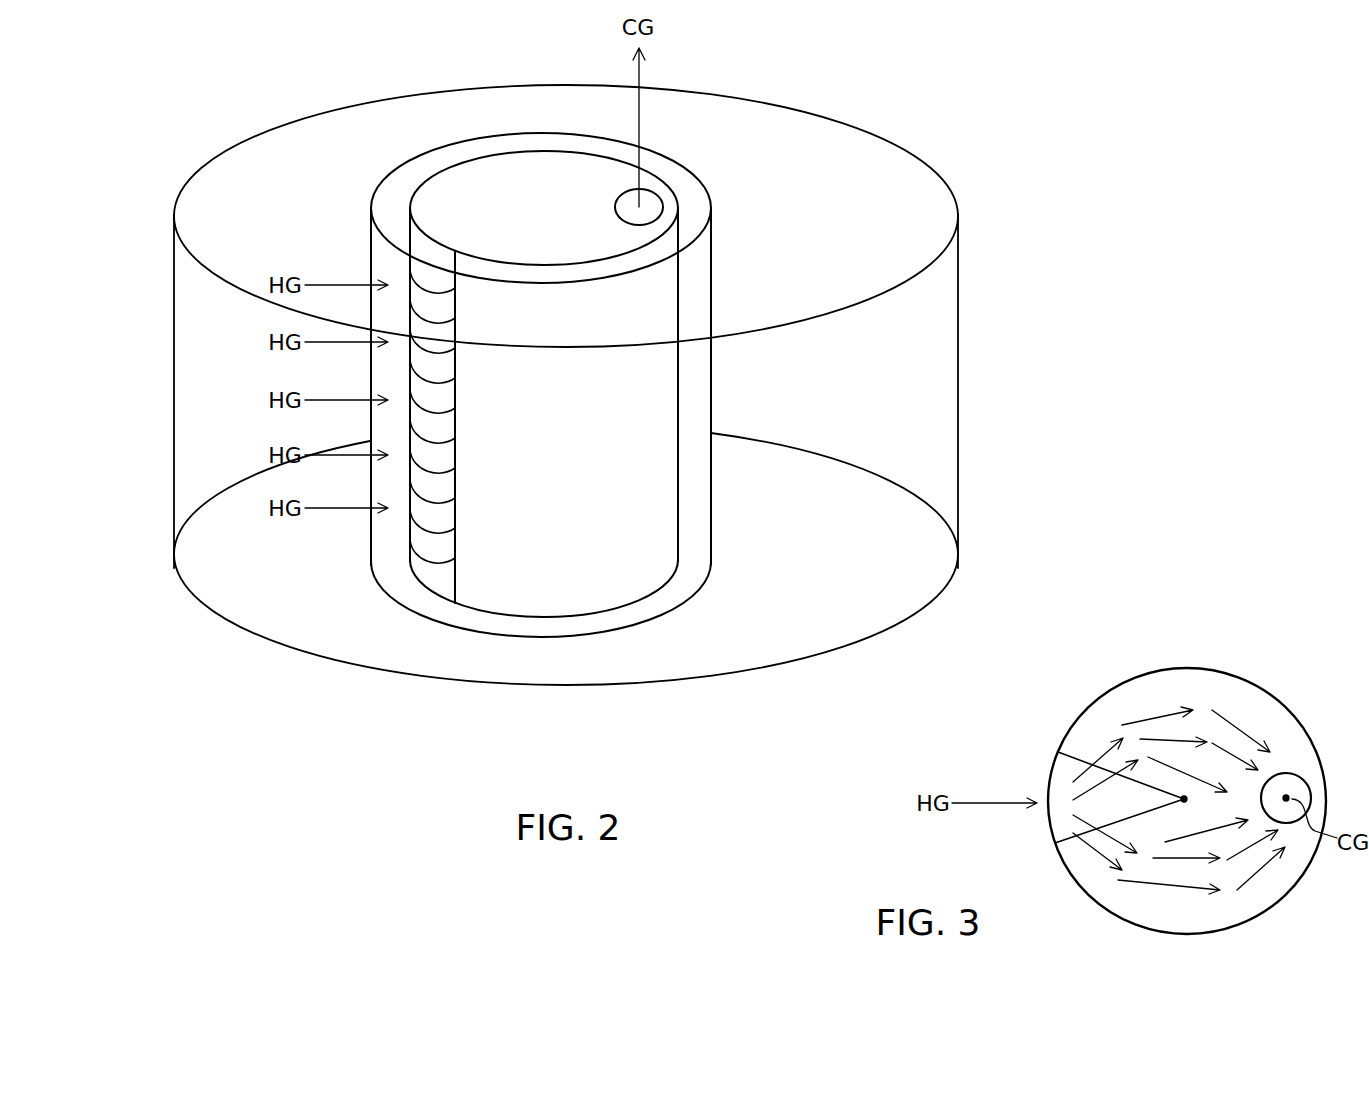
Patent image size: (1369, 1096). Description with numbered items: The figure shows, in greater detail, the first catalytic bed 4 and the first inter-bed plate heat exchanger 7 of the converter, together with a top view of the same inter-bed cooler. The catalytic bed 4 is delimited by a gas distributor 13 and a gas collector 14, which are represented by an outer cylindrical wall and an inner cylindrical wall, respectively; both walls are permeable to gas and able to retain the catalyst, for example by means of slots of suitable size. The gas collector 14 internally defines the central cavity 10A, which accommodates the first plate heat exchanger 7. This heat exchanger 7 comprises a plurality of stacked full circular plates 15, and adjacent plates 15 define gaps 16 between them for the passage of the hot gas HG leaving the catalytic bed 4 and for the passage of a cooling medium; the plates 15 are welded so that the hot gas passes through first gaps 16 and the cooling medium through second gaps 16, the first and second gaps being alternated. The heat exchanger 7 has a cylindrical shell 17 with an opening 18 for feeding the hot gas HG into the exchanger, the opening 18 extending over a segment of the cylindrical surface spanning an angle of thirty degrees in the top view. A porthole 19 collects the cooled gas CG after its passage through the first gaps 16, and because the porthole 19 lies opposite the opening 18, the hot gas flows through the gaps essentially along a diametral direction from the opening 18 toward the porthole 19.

In FIG. 2, the first catalytic bed 4 is at (923, 412).
In FIG. 2, the gas distributor 13 is at (172, 348).
In FIG. 2, the central cavity 10A is at (390, 217).
In FIG. 2, the gas collector 14 is at (370, 250).
In FIG. 2, the cylindrical shell 17 is at (637, 578).
In FIG. 2, the first inter-bed plate heat exchanger 7 is at (666, 311).
In FIG. 3, the first inter-bed plate heat exchanger 7 is at (1233, 604).
In FIG. 2, the opening 18 is at (455, 578).
In FIG. 3, the opening 18 is at (1048, 774).
In FIG. 2, the gaps 16 is at (432, 535).
In FIG. 2, the stacked full circular plates 15 is at (425, 555).
In FIG. 2, the porthole 19 is at (657, 195).
In FIG. 3, the porthole 19 is at (1287, 772).